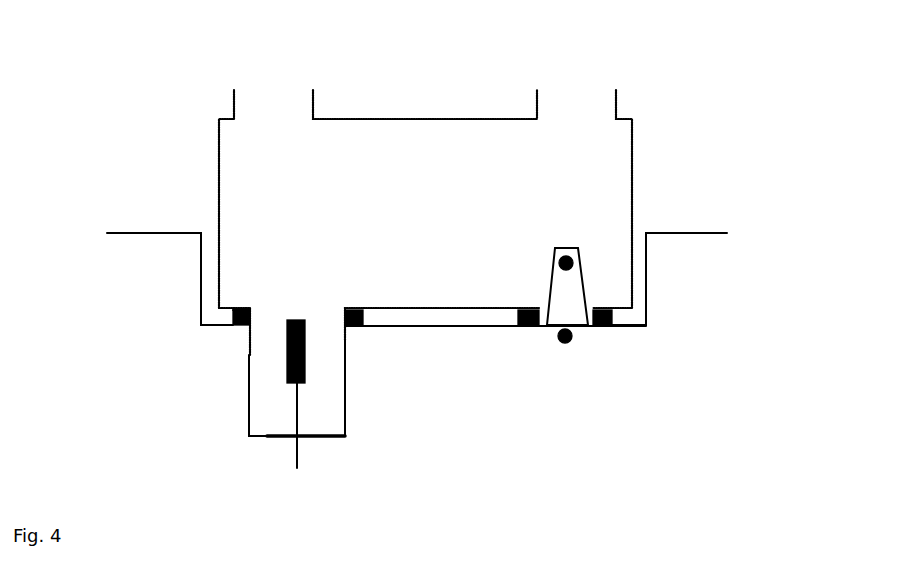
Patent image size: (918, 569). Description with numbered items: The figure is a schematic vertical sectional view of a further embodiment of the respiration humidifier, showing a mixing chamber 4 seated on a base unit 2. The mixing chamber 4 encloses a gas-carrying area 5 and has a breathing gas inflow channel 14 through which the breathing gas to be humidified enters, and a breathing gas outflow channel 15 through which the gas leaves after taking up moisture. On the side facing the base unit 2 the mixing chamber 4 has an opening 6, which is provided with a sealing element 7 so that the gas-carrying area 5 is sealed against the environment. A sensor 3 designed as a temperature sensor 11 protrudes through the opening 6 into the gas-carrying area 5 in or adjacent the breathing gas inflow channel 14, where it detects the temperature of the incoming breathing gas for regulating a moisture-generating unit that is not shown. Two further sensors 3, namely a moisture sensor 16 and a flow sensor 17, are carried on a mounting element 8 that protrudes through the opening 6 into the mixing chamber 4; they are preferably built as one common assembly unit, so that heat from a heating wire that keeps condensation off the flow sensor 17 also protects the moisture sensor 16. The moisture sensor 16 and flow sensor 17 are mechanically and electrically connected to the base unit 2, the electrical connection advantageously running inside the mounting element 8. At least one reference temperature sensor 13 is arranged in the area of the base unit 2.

The base unit 2 is at (155, 243).
The sensor 3 is at (533, 329).
The mixing chamber 4 is at (583, 165).
The gas-carrying area 5 is at (345, 197).
The opening 6 is at (267, 308).
The sealing element 7 is at (233, 325).
The mounting element 8 is at (567, 295).
The temperature sensor 11 is at (303, 343).
The reference temperature sensor 13 is at (565, 336).
The breathing gas inflow channel 14 is at (272, 95).
The breathing gas outflow channel 15 is at (573, 95).
The moisture sensor 16 is at (669, 230).
The flow sensor 17 is at (578, 248).